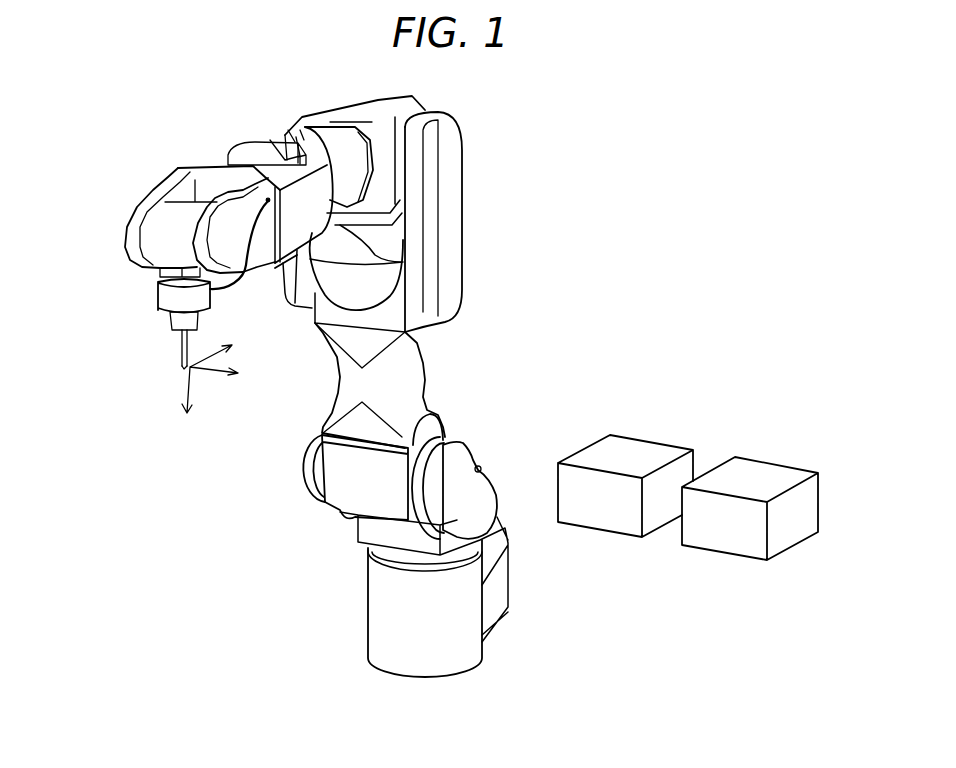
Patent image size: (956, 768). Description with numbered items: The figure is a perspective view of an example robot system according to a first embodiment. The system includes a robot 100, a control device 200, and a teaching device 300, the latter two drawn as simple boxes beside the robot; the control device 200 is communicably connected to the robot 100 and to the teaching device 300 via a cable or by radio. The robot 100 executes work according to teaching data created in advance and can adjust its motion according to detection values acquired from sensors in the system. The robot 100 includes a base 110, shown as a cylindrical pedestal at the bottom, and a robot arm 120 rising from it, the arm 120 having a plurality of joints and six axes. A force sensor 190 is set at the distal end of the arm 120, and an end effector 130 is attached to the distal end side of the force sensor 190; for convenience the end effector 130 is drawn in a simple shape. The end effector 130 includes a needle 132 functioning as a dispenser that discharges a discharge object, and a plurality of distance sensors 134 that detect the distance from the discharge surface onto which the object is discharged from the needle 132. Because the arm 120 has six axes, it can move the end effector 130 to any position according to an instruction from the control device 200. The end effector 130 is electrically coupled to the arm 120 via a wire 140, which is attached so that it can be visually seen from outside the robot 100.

The robot 100 is at (631, 123).
The base 110 is at (463, 640).
The robot arm 120 is at (496, 215).
The end effector 130 is at (98, 342).
The needle 132 is at (182, 366).
The distance sensors 134 is at (175, 332).
The wire 140 is at (233, 292).
The force sensor 190 is at (163, 292).
The control device 200 is at (642, 445).
The teaching device 300 is at (753, 470).